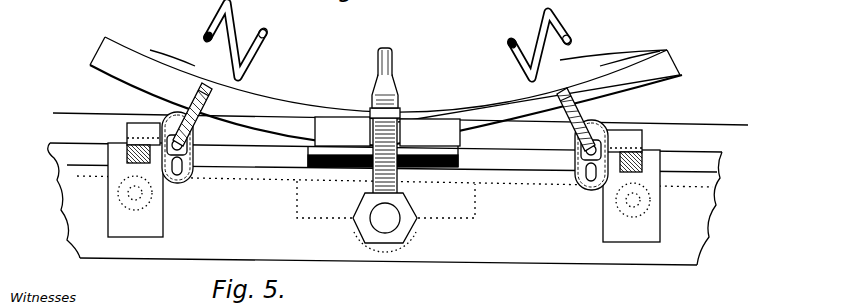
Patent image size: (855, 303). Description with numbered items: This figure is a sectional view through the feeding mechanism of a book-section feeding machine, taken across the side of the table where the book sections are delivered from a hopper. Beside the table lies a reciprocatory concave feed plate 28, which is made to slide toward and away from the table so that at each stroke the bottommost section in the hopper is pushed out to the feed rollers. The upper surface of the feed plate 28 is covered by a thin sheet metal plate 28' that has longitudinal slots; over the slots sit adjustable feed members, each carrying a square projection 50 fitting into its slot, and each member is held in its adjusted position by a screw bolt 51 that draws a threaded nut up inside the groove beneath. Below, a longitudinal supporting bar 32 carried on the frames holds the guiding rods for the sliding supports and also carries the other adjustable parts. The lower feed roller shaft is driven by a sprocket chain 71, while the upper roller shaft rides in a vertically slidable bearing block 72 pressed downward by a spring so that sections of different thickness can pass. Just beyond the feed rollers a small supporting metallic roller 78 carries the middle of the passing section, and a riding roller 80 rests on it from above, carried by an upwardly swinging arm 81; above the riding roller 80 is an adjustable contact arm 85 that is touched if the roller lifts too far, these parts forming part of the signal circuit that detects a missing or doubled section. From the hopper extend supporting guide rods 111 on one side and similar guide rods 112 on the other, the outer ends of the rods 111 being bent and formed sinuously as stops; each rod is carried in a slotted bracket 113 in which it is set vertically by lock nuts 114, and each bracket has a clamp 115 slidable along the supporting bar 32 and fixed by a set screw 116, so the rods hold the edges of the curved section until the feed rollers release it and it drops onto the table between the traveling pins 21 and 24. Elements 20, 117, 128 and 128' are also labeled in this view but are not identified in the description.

The plate 20 is at (317, 128).
The pins 21 is at (300, 116).
The pins 24 is at (388, 158).
The reciprocatory concave feed plate 28 is at (539, 86).
The thin sheet metal plate 28' is at (630, 58).
The supporting bar 32 is at (385, 204).
The square projection 50 is at (352, 230).
The screw bolt 51 is at (385, 225).
The sprocket chain 71 is at (322, 168).
The bearing block 72 is at (372, 180).
The supporting metallic roller 78 is at (308, 152).
The riding roller 80 is at (400, 104).
The upwardly swinging arm 81 is at (396, 80).
The contact arm 85 is at (393, 60).
The supporting guide rods 111 is at (204, 37).
The guide rods 112 is at (216, 92).
The bracket 113 is at (187, 170).
The lock nuts 114 is at (160, 128).
The clamp 115 is at (384, 204).
The set screw 116 is at (110, 198).
The spring 117 is at (263, 40).
The curved bar 128 is at (386, 91).
The upper edge of curved bar 128' is at (172, 59).